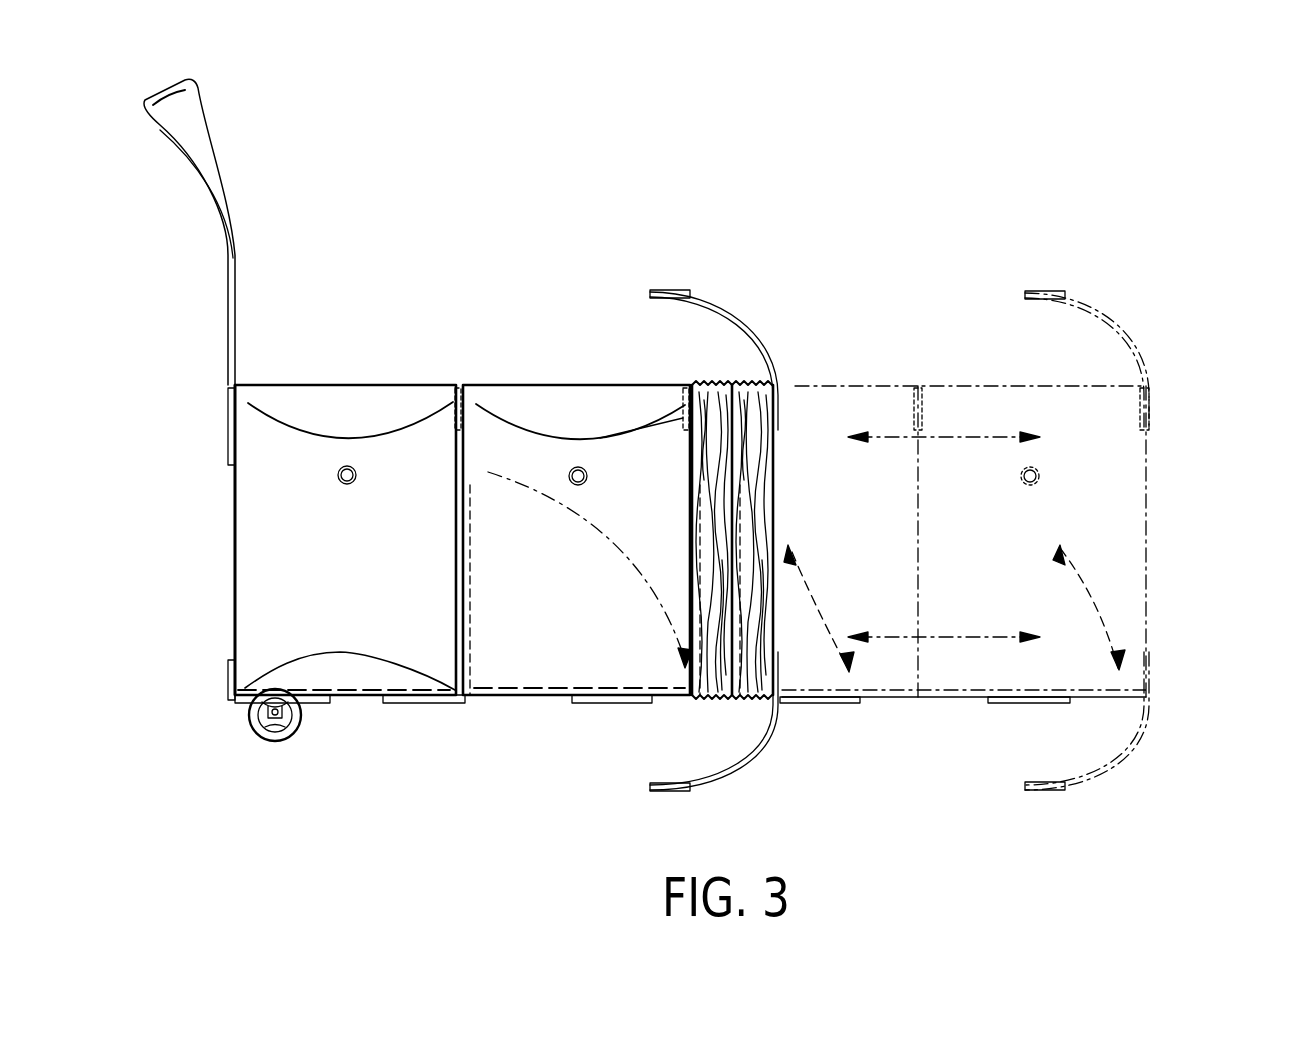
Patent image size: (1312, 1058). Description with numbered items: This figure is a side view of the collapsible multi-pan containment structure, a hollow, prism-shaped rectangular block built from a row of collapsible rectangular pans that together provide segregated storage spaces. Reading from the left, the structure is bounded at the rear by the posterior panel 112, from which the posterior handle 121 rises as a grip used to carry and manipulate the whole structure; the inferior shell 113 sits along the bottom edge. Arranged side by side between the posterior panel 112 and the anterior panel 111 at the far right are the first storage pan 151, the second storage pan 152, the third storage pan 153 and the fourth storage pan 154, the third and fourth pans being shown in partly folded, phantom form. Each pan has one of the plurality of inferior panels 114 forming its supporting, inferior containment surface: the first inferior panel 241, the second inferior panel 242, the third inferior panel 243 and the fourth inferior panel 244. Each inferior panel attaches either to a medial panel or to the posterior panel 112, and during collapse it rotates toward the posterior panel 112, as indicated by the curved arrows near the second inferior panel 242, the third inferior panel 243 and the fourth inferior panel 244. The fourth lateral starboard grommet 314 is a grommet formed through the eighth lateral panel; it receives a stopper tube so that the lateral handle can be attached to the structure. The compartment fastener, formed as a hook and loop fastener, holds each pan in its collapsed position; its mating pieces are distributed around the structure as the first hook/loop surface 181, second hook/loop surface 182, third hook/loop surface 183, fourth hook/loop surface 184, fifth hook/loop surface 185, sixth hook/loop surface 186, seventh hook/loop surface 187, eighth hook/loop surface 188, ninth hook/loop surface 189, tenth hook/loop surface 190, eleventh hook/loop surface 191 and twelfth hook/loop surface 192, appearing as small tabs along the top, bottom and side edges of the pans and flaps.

The anterior panel 111 is at (1148, 482).
The posterior panel 112 is at (235, 543).
The inferior shell 113 is at (522, 703).
The plurality of inferior panels 114 is at (437, 690).
The posterior handle 121 is at (236, 258).
The first storage pan 151 is at (350, 385).
The second storage pan 152 is at (505, 385).
The third storage pan 153 is at (705, 385).
The fourth storage pan 154 is at (740, 385).
The first hook/loop surface 181 is at (1047, 300).
The second hook/loop surface 182 is at (1150, 405).
The third hook/loop surface 183 is at (918, 405).
The fourth hook/loop surface 184 is at (685, 421).
The fifth hook/loop surface 185 is at (437, 386).
The sixth hook/loop surface 186 is at (228, 410).
The seventh hook/loop surface 187 is at (1030, 785).
The eighth hook/loop surface 188 is at (1043, 703).
The ninth hook/loop surface 189 is at (818, 703).
The tenth hook/loop surface 190 is at (598, 703).
The eleventh hook/loop surface 191 is at (388, 703).
The twelfth hook/loop surface 192 is at (228, 680).
The first inferior panel 241 is at (355, 690).
The second inferior panel 242 is at (572, 690).
The third inferior panel 243 is at (700, 385).
The fourth inferior panel 244 is at (743, 497).
The fourth lateral starboard grommet 314 is at (1040, 476).